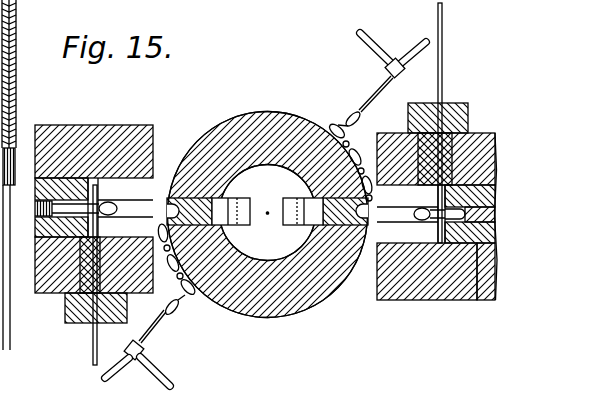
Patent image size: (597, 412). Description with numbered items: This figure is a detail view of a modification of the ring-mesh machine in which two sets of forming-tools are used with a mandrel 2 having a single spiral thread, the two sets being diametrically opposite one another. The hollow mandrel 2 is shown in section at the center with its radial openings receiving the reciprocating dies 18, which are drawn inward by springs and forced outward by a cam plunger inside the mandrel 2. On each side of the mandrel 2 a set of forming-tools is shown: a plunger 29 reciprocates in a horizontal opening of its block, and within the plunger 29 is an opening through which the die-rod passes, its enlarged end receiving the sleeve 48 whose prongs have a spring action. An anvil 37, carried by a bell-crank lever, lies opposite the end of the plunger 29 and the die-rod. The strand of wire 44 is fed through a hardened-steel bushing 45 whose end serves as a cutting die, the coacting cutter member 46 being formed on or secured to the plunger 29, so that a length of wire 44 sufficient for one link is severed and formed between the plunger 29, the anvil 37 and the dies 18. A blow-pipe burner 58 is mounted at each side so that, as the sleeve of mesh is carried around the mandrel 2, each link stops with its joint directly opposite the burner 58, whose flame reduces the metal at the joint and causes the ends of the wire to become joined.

The mandrel 2 is at (261, 171).
The reciprocating dies 18 is at (250, 226).
The plunger 29 is at (478, 246).
The anvil 37 is at (114, 206).
The wire 44 is at (93, 340).
The bushing 45 is at (65, 316).
The cutter member 46 is at (78, 175).
The sleeve 48 is at (42, 244).
The blow-pipe burner 58 is at (408, 52).